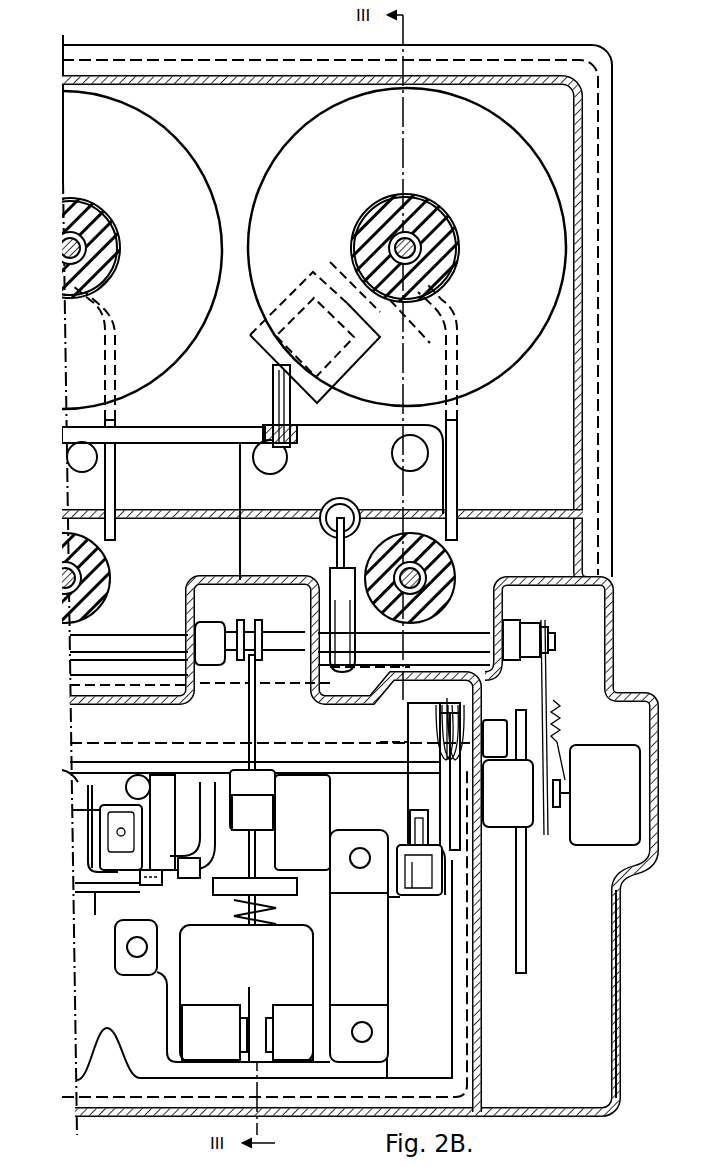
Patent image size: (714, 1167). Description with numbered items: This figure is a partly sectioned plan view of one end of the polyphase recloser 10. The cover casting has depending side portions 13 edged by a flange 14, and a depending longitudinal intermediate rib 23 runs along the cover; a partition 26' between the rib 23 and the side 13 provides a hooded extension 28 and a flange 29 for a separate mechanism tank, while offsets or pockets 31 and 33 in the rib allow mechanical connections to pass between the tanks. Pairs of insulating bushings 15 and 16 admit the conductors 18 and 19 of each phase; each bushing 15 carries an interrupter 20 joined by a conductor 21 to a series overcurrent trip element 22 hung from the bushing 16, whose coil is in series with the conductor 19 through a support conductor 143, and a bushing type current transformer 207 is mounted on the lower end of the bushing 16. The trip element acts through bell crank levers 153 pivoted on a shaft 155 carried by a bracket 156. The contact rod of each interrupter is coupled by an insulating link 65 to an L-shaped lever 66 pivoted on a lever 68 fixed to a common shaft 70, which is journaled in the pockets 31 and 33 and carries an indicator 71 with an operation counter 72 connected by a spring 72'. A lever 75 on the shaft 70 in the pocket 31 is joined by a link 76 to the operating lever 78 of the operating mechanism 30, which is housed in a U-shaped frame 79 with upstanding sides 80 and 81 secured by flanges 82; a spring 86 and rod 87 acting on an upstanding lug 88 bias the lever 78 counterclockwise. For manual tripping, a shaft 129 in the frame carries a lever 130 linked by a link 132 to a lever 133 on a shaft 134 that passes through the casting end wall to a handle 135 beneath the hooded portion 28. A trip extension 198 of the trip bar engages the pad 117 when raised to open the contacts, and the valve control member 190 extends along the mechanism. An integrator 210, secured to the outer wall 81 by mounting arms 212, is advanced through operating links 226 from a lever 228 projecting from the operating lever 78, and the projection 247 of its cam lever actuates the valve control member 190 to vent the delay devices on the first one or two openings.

The polyphase recloser 10 is at (358, 585).
The depending side portions 13 is at (588, 412).
The flange 14 is at (605, 445).
The insulating bushing 15 is at (105, 575).
The insulating bushing 16 is at (118, 230).
The conductor 18 is at (425, 578).
The conductor 19 is at (96, 248).
The interrupter 20 is at (322, 534).
The conductor 21 is at (115, 345).
The series type overcurrent trip element 22 is at (303, 337).
The intermediate rib 23 is at (172, 705).
The partition 26' is at (502, 899).
The hooded extension 28 is at (586, 994).
The flange 29 is at (452, 955).
The operating mechanism 30 is at (302, 822).
The pocket 31 is at (240, 590).
The pocket 33 is at (533, 588).
The insulating link 65 is at (322, 526).
The L-shaped lever 66 is at (337, 555).
The lever 68 is at (355, 648).
The shaft 70 is at (130, 637).
The indicator 71 is at (546, 838).
The operation counter 72 is at (596, 784).
The spring 72' is at (571, 738).
The lever 75 is at (262, 626).
The link 76 is at (256, 705).
The operating lever 78 is at (270, 770).
The frame 79 is at (270, 911).
The upstanding side 80 is at (332, 958).
The upstanding side 81 is at (182, 962).
The flange 82 is at (342, 832).
The spring 86 is at (278, 905).
The rod 87 is at (258, 843).
The lug 88 is at (297, 885).
The pad 117 is at (142, 897).
The shaft 129 is at (405, 895).
The lever 130 is at (400, 845).
The link 132 is at (412, 820).
The lever 133 is at (408, 772).
The shaft 134 is at (408, 735).
The handle 135 is at (527, 920).
The support conductor 143 is at (345, 275).
The bell crank lever 153 is at (273, 400).
The shaft 155 is at (186, 428).
The bracket 156 is at (255, 452).
The valve control member 190 is at (85, 800).
The trip extension 198 is at (95, 913).
The bushing type current transformer 207 is at (268, 165).
The integrator 210 is at (119, 824).
The mounting arms 212 is at (145, 778).
The operating links 226 is at (170, 876).
The lever 228 is at (215, 845).
The projection 247 is at (85, 790).